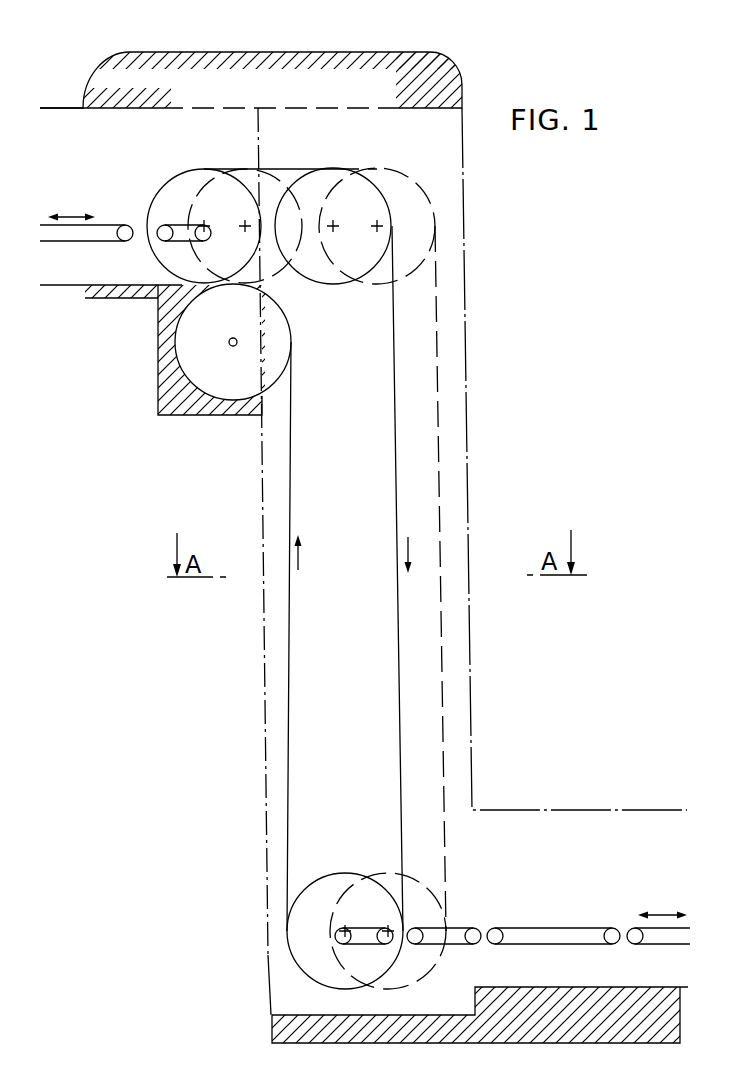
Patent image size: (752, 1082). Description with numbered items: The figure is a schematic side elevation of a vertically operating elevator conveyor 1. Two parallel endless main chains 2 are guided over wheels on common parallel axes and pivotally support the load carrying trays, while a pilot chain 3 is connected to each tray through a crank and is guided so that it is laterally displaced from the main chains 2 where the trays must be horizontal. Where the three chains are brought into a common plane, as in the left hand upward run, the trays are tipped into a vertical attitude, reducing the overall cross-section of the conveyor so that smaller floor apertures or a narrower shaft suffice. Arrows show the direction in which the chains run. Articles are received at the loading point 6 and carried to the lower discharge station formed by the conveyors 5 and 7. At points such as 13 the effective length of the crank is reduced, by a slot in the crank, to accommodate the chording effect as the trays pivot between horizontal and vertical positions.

The feed conveyor 1 is at (86, 219).
The main chains 2 is at (393, 430).
The pilot chain 3 is at (438, 480).
The conveyor 5 is at (388, 918).
The loading point 6 is at (163, 218).
The conveyor 7 is at (561, 921).
The points where crank length is reduced 13 is at (276, 312).